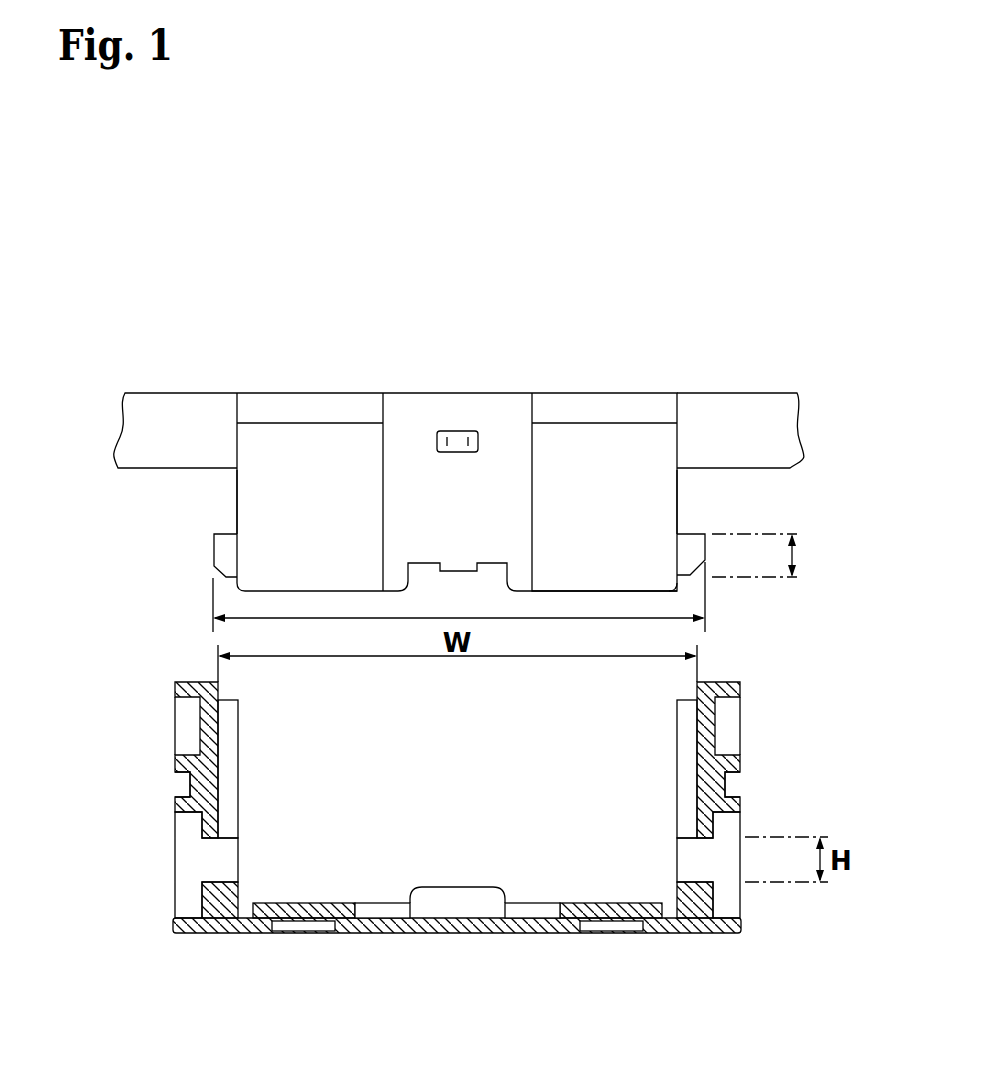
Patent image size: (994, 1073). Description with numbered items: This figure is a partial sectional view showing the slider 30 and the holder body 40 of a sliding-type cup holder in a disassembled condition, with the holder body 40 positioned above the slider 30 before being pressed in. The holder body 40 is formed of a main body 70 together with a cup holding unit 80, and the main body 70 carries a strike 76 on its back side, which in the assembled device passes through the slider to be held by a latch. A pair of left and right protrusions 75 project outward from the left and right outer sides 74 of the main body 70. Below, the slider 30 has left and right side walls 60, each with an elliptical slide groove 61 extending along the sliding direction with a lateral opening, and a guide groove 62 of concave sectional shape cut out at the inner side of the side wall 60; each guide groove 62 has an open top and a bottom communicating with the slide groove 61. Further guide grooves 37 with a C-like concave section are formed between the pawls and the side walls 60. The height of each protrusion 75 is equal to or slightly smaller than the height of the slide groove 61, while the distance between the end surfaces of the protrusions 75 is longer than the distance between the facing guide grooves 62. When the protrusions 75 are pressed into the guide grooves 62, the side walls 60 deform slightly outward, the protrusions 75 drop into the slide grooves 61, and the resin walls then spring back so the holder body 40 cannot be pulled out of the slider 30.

The holder body 40 is at (280, 243).
The cup holding unit 80 is at (172, 408).
The main body 70 is at (292, 407).
The strike 76 is at (456, 432).
The outer side 74 is at (237, 496).
The protrusion 75 is at (222, 549).
The slider 30 is at (384, 935).
The guide groove 62 is at (232, 745).
The side wall 60 is at (178, 767).
The guide groove 37 is at (184, 783).
The slide groove 61 is at (215, 867).